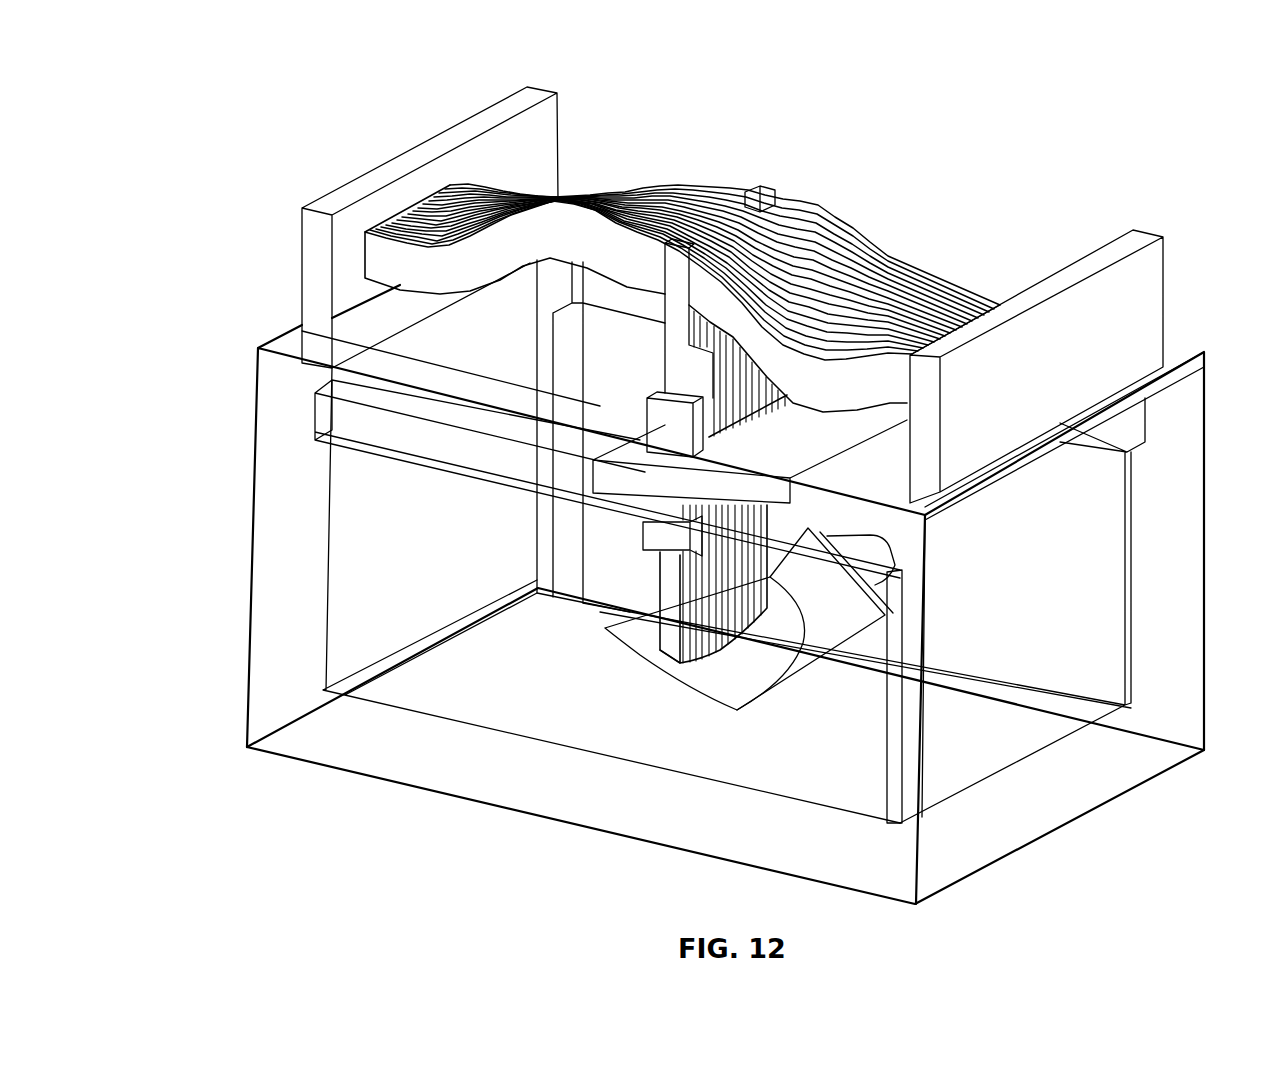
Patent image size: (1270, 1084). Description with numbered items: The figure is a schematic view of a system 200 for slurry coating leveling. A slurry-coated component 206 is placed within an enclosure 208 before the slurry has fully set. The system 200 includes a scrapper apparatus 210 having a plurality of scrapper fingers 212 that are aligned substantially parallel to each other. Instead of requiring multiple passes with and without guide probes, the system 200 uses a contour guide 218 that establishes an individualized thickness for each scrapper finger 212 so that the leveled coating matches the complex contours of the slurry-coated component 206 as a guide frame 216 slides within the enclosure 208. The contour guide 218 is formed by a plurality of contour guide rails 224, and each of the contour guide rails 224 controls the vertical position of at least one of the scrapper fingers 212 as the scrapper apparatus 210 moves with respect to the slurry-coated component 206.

The system for slurry coating leveling 200 is at (456, 85).
The contour guide rails 224 is at (603, 233).
The contour guide 218 is at (938, 264).
The enclosure 208 is at (1190, 352).
The guide frame 216 is at (618, 485).
The scrapper apparatus 210 is at (652, 316).
The scrapper fingers 212 is at (672, 627).
The slurry-coated component 206 is at (665, 668).